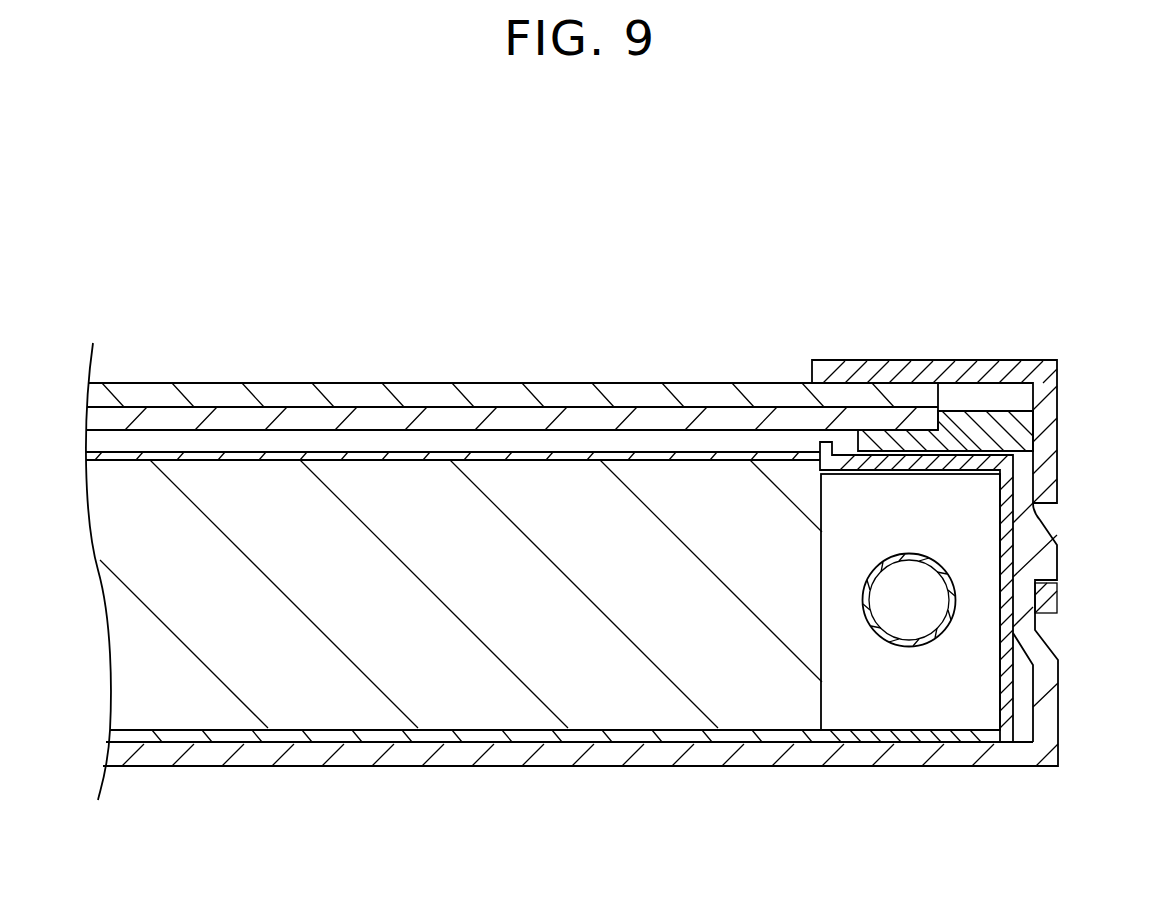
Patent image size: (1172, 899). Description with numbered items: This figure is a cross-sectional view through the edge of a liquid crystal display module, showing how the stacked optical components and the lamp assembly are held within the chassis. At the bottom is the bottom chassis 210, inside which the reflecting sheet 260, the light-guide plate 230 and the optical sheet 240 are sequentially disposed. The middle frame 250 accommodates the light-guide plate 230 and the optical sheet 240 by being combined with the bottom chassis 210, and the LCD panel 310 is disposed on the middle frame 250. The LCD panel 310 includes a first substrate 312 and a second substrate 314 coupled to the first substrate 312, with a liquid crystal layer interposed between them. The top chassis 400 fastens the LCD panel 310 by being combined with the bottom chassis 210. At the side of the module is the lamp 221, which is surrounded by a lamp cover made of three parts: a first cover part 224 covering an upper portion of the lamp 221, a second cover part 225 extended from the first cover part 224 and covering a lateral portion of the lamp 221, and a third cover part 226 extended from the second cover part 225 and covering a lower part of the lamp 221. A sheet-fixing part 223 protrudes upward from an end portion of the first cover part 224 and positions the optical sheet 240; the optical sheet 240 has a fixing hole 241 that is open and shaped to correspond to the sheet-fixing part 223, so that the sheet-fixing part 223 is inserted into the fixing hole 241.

The bottom chassis 210 is at (970, 758).
The lamp 221 is at (908, 647).
The sheet-fixing part 223 is at (820, 443).
The first cover part 224 is at (933, 463).
The second cover part 225 is at (1013, 627).
The third cover part 226 is at (843, 744).
The light-guide plate 230 is at (367, 493).
The optical sheet 240 is at (435, 455).
The fixing hole 241 is at (800, 450).
The middle frame 250 is at (993, 420).
The reflecting sheet 260 is at (661, 735).
The LCD panel 310 is at (512, 346).
The first substrate 312 is at (526, 420).
The second substrate 314 is at (591, 396).
The top chassis 400 is at (1050, 370).